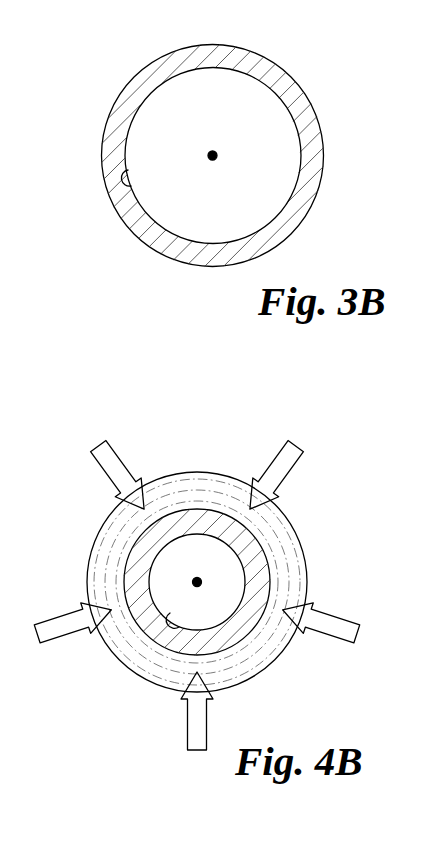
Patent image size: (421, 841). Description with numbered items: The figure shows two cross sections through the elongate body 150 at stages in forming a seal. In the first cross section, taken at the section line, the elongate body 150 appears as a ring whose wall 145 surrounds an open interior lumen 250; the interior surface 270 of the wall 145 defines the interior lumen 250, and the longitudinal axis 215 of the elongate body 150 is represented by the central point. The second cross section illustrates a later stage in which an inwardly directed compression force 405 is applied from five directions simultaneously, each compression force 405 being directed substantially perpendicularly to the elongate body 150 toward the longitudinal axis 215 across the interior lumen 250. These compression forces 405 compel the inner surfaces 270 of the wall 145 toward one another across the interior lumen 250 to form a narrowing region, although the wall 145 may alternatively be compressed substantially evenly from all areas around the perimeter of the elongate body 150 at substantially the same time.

In FIG. 3B, the wall 145 is at (293, 89).
In FIG. 4B, the wall 145 is at (142, 567).
In FIG. 3B, the elongate body 150 is at (293, 213).
In FIG. 4B, the elongate body 150 is at (232, 628).
In FIG. 3B, the longitudinal axis 215 is at (213, 152).
In FIG. 4B, the longitudinal axis 215 is at (197, 582).
In FIG. 3B, the interior lumen 250 is at (162, 103).
In FIG. 4B, the interior lumen 250 is at (190, 555).
In FIG. 3B, the interior surface 270 is at (132, 188).
In FIG. 4B, the interior surface 270 is at (178, 616).
In FIG. 4B, the compression force 405 is at (280, 463).